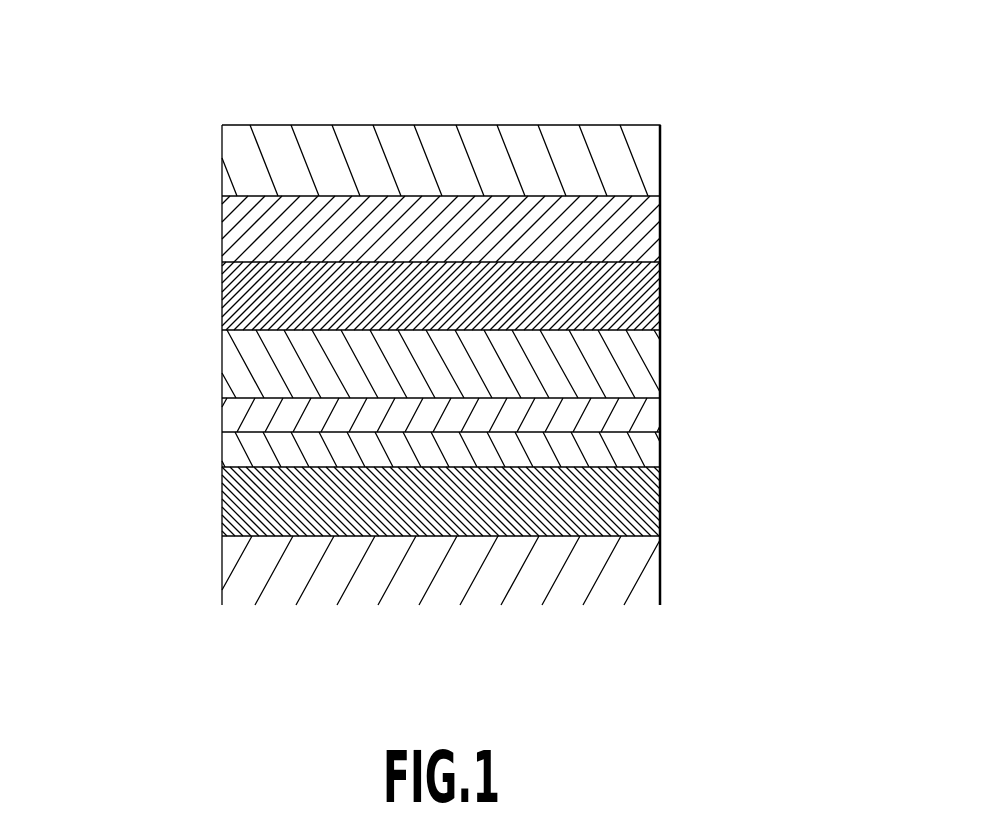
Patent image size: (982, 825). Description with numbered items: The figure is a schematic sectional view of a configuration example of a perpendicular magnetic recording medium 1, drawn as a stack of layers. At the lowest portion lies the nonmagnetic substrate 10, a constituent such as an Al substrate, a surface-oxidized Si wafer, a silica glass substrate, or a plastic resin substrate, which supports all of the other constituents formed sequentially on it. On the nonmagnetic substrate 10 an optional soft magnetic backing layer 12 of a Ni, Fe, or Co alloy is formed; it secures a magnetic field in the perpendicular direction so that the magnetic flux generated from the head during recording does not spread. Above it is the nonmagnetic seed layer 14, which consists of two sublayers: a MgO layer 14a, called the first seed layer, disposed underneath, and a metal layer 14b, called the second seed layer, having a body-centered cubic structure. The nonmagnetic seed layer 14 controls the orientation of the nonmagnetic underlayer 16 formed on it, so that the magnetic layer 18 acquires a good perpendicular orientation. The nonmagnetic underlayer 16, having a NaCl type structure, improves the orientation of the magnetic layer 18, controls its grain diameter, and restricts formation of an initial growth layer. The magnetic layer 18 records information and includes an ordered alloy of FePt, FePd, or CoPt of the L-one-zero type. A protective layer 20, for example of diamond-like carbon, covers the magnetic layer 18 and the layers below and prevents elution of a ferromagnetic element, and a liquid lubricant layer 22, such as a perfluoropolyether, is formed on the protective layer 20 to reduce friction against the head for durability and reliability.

The perpendicular magnetic recording medium 1 is at (571, 66).
The nonmagnetic substrate 10 is at (660, 577).
The soft magnetic backing layer 12 is at (660, 504).
The nonmagnetic seed layer 14 is at (421, 433).
The MgO layer 14a is at (222, 455).
The metal layer 14b is at (222, 420).
The nonmagnetic underlayer 16 is at (660, 364).
The magnetic layer 18 is at (660, 296).
The protective layer 20 is at (660, 230).
The liquid lubricant layer 22 is at (660, 163).